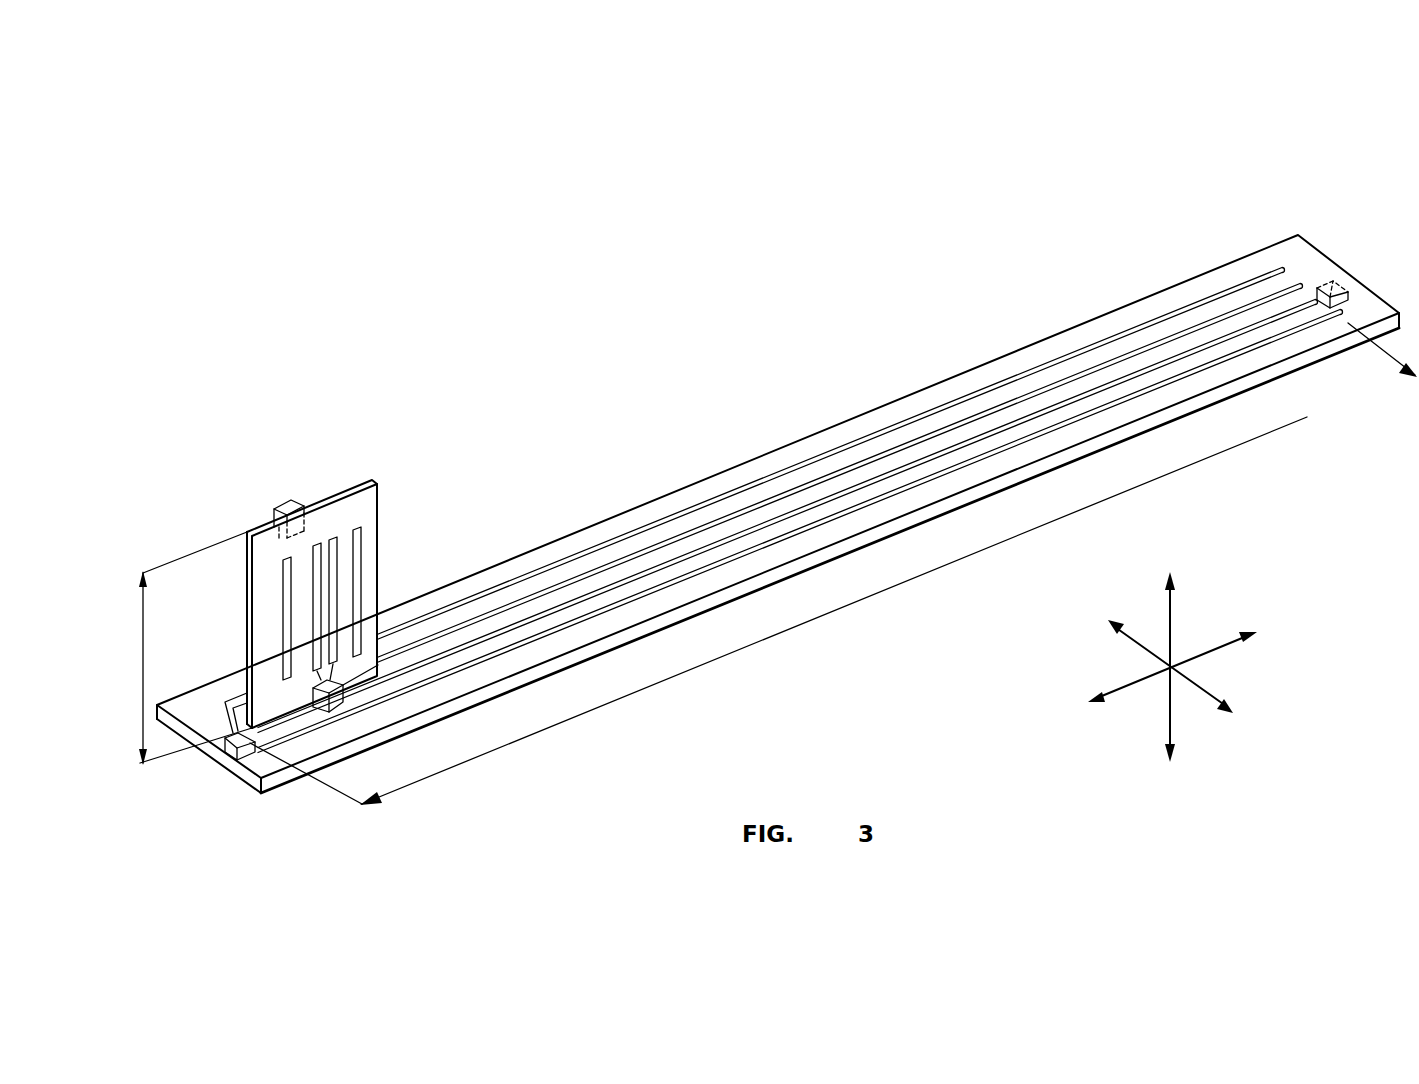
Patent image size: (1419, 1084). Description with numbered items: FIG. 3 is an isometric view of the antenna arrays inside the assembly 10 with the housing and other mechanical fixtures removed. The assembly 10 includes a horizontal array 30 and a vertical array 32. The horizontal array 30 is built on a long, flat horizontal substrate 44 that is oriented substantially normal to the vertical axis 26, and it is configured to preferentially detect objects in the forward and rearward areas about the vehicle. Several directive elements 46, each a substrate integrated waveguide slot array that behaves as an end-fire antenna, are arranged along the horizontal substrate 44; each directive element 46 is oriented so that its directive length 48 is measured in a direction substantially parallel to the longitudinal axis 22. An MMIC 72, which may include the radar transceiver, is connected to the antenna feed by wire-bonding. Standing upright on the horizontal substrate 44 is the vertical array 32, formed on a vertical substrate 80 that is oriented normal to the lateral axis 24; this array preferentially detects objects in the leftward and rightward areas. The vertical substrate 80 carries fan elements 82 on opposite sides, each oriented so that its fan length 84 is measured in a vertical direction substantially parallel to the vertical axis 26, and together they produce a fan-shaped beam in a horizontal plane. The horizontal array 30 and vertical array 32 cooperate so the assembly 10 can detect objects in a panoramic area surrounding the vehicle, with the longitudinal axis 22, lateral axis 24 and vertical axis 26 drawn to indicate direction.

The assembly 10 is at (1155, 214).
The horizontal array 30 is at (1313, 245).
The directive element 46 is at (1112, 367).
The vertical array 32 is at (338, 495).
The vertical substrate 80 is at (251, 528).
The fan element 82 is at (358, 597).
The MMIC 72 is at (284, 506).
The fan length 84 is at (143, 693).
The directive length 48 is at (477, 757).
The horizontal substrate 44 is at (1263, 382).
The longitudinal axis 22 is at (1212, 650).
The lateral axis 24 is at (1140, 648).
The vertical axis 26 is at (1168, 715).